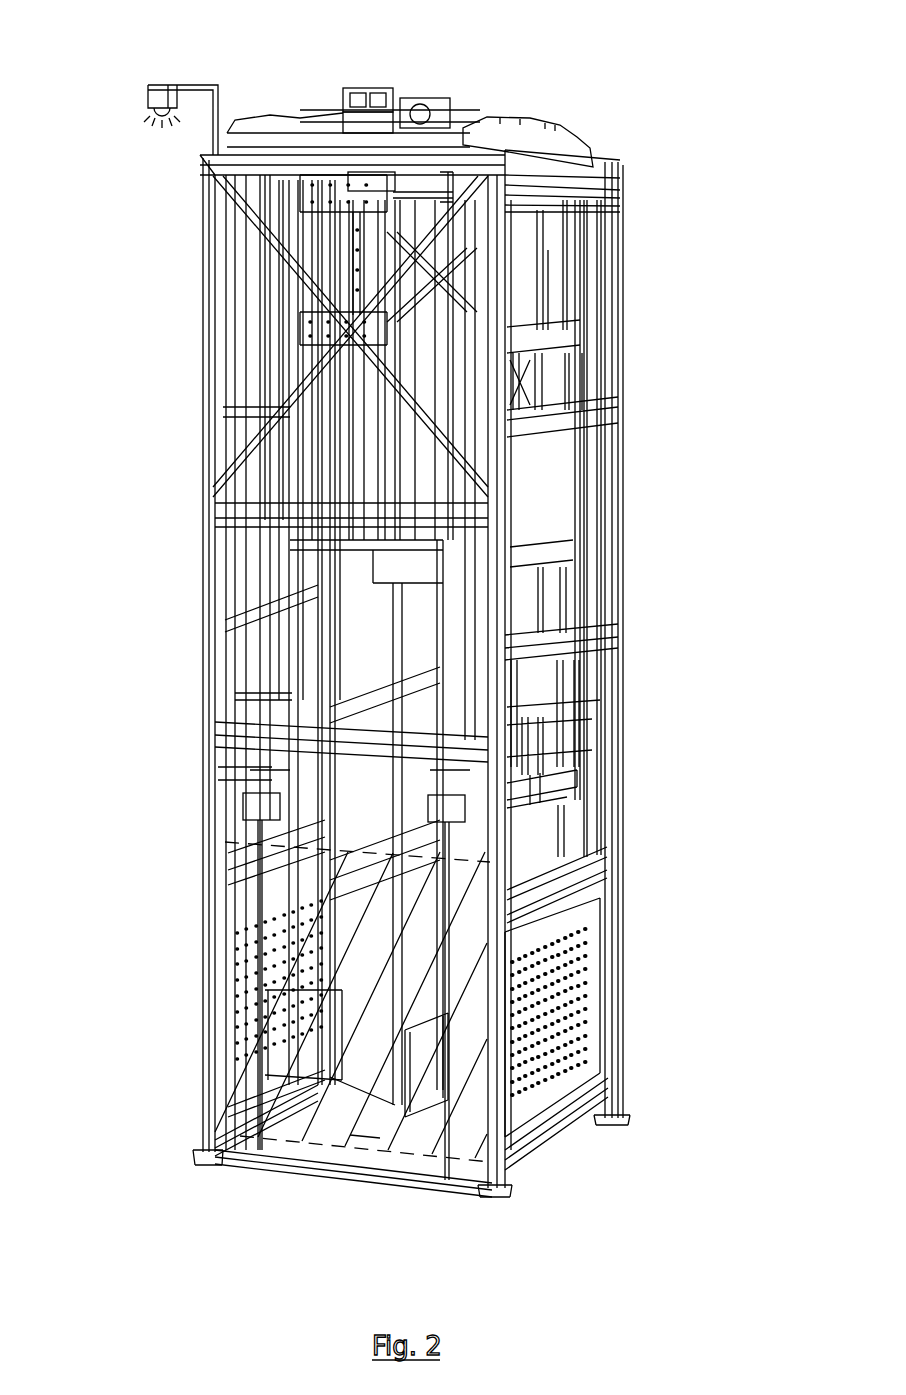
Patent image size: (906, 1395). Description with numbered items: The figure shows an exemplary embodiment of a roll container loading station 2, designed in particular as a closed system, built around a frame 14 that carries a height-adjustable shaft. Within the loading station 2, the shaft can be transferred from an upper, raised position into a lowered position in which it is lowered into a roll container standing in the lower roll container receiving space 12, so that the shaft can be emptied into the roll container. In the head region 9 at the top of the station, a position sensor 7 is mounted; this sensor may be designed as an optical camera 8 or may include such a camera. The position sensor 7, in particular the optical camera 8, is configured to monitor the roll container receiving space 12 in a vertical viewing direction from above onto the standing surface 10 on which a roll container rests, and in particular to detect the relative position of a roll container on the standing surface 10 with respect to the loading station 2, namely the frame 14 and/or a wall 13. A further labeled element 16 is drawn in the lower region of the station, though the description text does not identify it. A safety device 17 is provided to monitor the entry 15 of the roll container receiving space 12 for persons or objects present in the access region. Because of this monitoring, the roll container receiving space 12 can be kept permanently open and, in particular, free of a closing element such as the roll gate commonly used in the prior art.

The roll container loading station 2 is at (642, 100).
The position sensor 7 is at (370, 180).
The optical camera 8 is at (357, 202).
The head region 9 is at (530, 102).
The standing surface 10 is at (418, 1165).
The roll container receiving space 12 is at (313, 1143).
The wall 13 is at (563, 913).
The frame 14 is at (603, 794).
The entry 15 is at (367, 1152).
The perforated left panel 16 is at (280, 887).
The safety device 17 is at (163, 102).